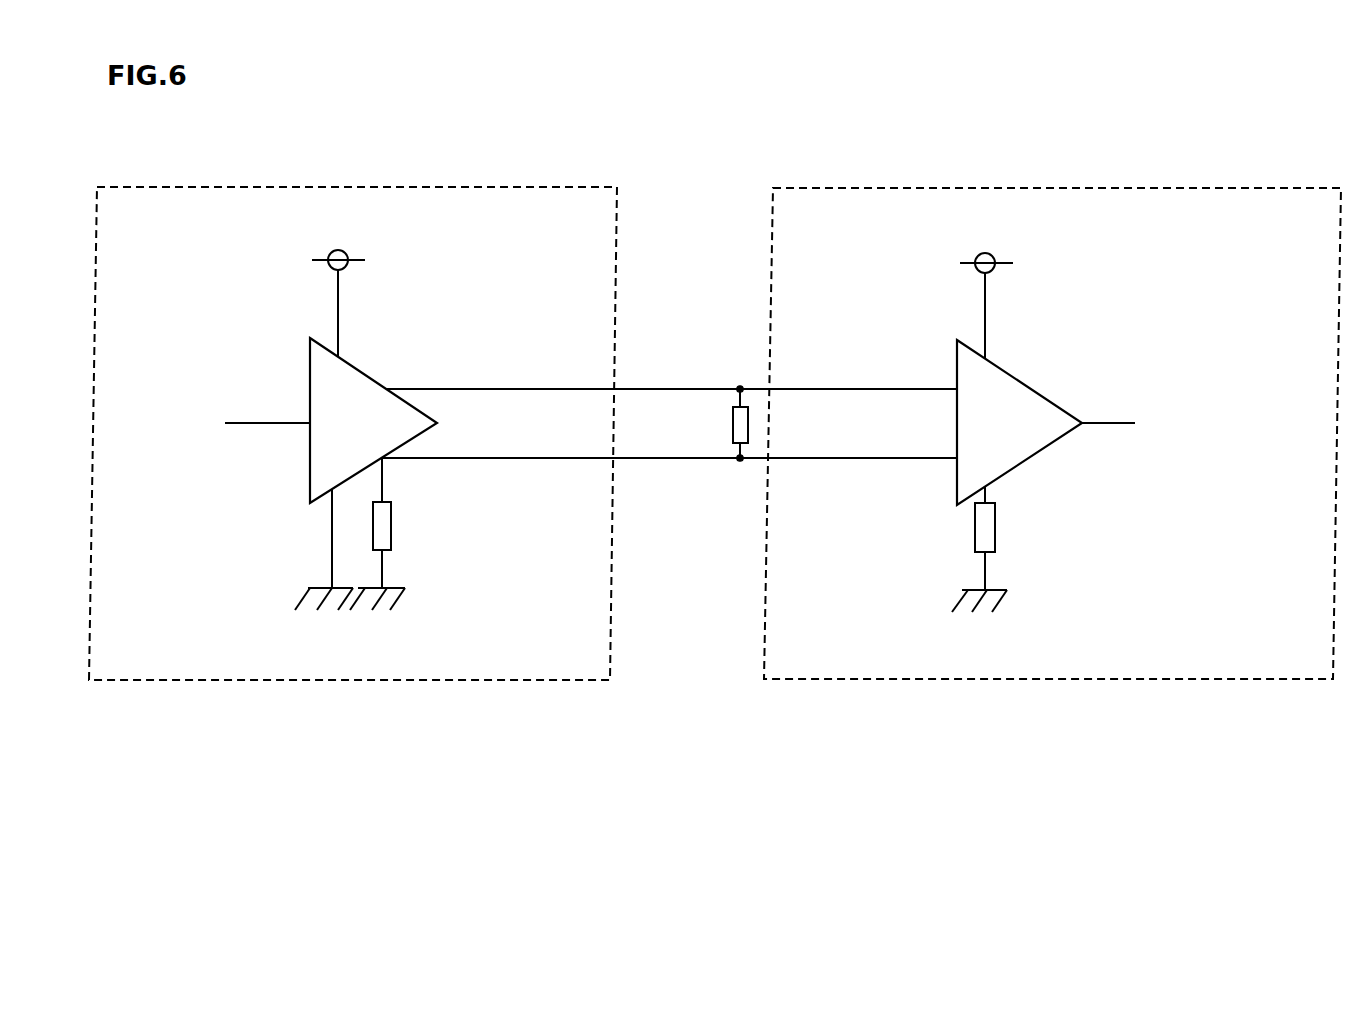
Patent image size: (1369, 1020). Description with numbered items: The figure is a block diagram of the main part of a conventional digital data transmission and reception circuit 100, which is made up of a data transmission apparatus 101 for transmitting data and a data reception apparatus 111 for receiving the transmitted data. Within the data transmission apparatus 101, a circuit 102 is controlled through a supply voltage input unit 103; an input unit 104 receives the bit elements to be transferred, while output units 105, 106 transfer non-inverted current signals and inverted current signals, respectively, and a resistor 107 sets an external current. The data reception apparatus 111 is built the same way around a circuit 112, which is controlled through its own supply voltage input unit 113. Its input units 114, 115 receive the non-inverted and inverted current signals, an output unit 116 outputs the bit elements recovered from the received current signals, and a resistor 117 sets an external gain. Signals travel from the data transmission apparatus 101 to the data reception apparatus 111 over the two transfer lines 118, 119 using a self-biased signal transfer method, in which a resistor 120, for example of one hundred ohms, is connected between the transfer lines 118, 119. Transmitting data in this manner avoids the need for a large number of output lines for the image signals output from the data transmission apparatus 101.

The digital data transmission and reception circuit 100 is at (606, 102).
The data transmission apparatus 101 is at (353, 401).
The circuit 102 is at (337, 397).
The supply voltage Vin input unit 103 is at (376, 301).
The input unit 104 is at (255, 385).
The output unit 105 is at (450, 357).
The output unit 106 is at (452, 492).
The resistor 107 is at (438, 525).
The data reception apparatus 111 is at (1052, 401).
The circuit 112 is at (1057, 413).
The supply voltage Vin input unit 113 is at (1016, 303).
The input unit 114 is at (908, 348).
The input unit 115 is at (908, 493).
The output unit 116 is at (1153, 399).
The resistor 117 is at (1055, 543).
The transfer line 118 is at (688, 357).
The transfer line 119 is at (688, 488).
The resistor 120 is at (705, 423).